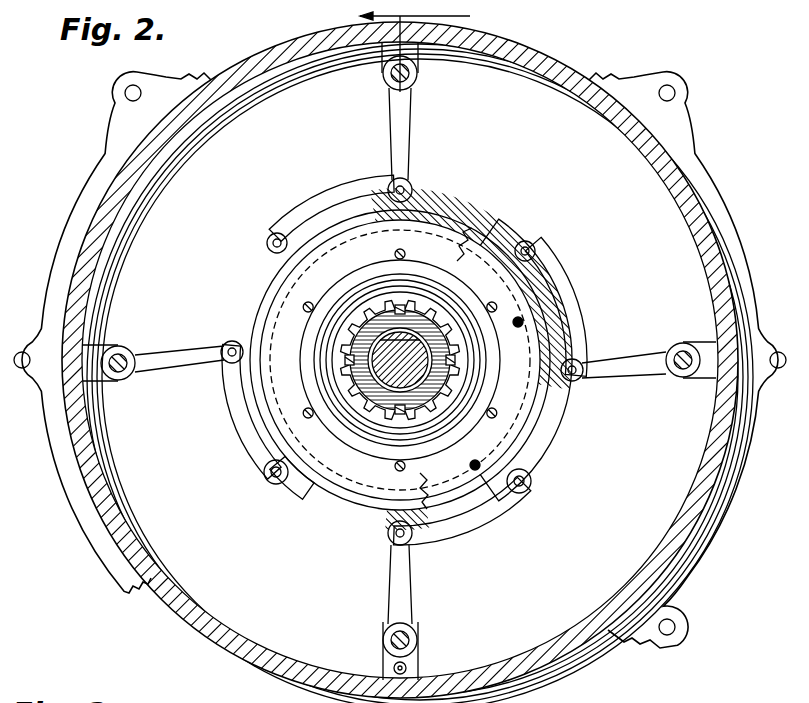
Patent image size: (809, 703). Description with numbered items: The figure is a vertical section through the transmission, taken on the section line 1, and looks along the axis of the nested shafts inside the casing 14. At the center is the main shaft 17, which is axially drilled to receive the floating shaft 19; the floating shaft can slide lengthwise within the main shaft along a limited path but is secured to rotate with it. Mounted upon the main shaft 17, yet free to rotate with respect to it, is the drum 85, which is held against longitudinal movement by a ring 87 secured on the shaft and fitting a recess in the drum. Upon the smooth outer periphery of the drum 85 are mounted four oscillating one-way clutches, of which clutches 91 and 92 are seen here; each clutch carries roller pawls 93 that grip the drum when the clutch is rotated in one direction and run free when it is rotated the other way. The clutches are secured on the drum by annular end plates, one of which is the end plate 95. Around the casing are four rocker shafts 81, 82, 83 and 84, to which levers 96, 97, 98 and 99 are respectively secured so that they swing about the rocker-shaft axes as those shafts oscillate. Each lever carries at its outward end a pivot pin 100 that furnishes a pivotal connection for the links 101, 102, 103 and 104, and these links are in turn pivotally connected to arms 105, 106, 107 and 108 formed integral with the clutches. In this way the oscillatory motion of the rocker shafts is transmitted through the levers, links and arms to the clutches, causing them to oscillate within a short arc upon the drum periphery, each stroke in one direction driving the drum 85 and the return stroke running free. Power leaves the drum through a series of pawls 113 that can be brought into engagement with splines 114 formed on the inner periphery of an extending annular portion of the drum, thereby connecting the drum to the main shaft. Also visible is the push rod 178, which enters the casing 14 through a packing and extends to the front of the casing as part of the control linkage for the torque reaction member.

The section line 1 is at (427, 50).
The casing 14 is at (680, 176).
The main shaft 17 is at (384, 335).
The floating shaft 19 is at (423, 387).
The rocker shaft 81 is at (683, 350).
The rocker shaft 82 is at (118, 380).
The rocker shaft 83 is at (414, 74).
The rocker shaft 84 is at (414, 641).
The drum 85 is at (468, 278).
The ring 87 is at (423, 373).
The oscillating one-way clutch 91 is at (520, 290).
The oscillating one-way clutch 92 is at (452, 250).
The roller pawl 93 is at (521, 320).
The annular end plate 95 is at (296, 298).
The lever 96 is at (648, 378).
The lever 97 is at (167, 355).
The lever 98 is at (404, 118).
The lever 99 is at (397, 580).
The pivot pin 100 is at (412, 190).
The link 101 is at (532, 286).
The link 102 is at (250, 455).
The link 103 is at (330, 194).
The link 104 is at (498, 517).
The arm 105 is at (522, 246).
The arm 106 is at (300, 478).
The arm 107 is at (268, 250).
The arm 108 is at (523, 463).
The pawl 113 is at (424, 306).
The spline 114 is at (367, 413).
The push rod 178 is at (408, 667).